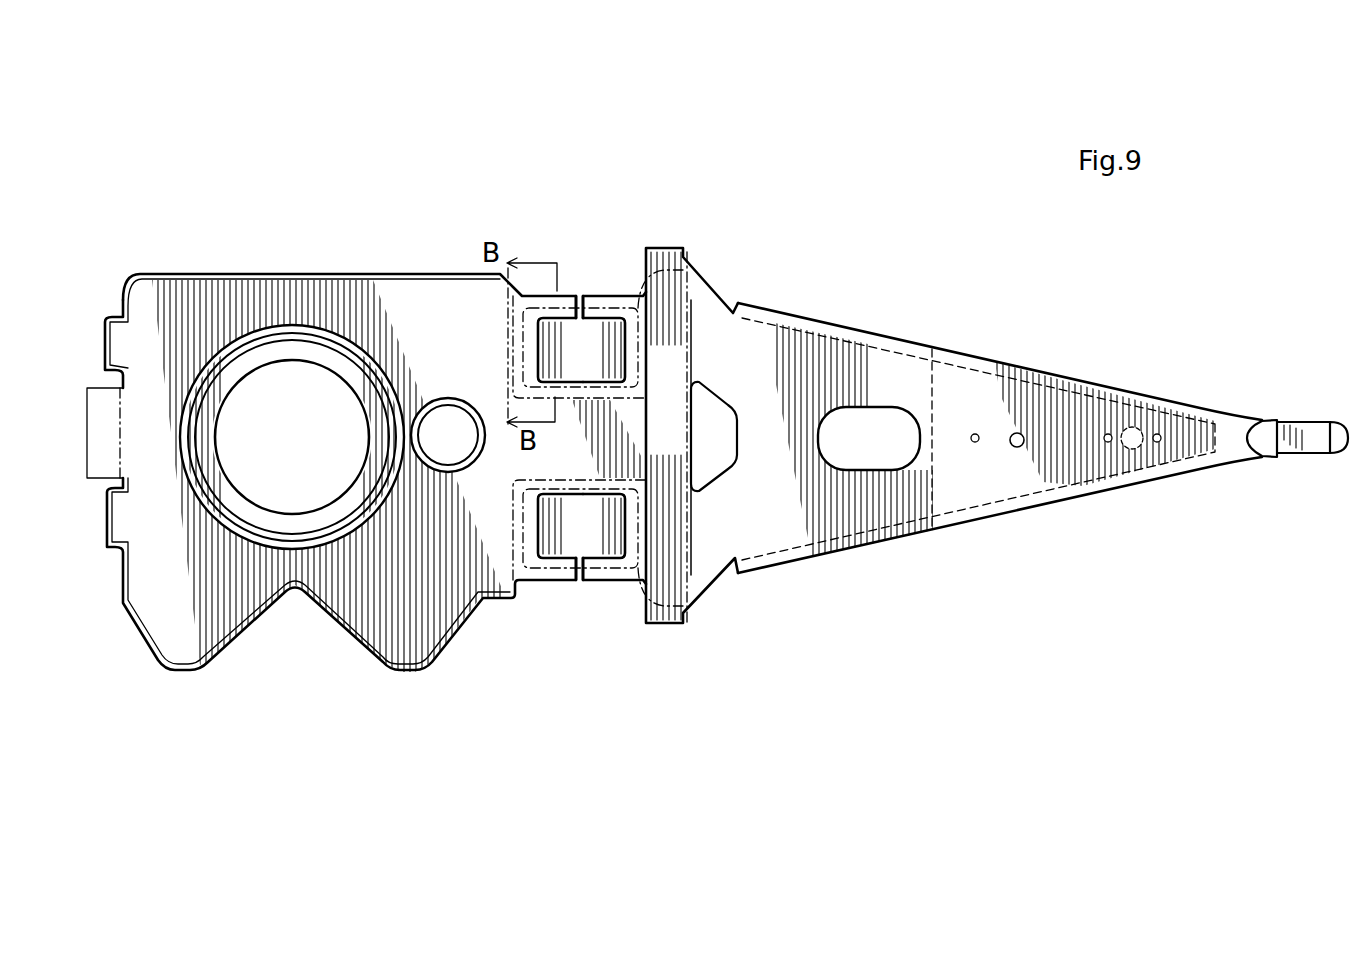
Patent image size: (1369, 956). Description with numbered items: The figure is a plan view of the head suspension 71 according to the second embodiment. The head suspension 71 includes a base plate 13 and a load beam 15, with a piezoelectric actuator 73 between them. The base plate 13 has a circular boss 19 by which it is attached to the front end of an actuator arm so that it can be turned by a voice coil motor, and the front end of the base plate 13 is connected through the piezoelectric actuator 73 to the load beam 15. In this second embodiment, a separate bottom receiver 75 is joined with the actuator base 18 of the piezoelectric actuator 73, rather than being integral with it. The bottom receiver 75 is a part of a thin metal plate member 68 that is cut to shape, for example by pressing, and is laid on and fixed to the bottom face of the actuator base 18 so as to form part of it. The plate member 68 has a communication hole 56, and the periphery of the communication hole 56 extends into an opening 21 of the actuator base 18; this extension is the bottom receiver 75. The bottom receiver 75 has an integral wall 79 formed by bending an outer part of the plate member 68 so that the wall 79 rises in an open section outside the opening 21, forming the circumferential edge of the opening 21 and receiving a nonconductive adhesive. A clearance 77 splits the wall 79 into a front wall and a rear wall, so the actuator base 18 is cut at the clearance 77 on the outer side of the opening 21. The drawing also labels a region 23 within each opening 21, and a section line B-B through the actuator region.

The base plate 13 is at (340, 295).
The load beam 15 is at (958, 382).
The actuator base 18 is at (515, 403).
The circular boss 19 is at (276, 385).
The opening 21 is at (645, 293).
The window opening 23 is at (570, 359).
The communication hole 56 is at (611, 352).
The plate member 68 is at (668, 475).
The head suspension 71 is at (940, 137).
The piezoelectric actuator 73 is at (679, 158).
The bottom receiver 75 is at (572, 313).
The clearance 77 is at (580, 296).
The wall 79 is at (604, 296).